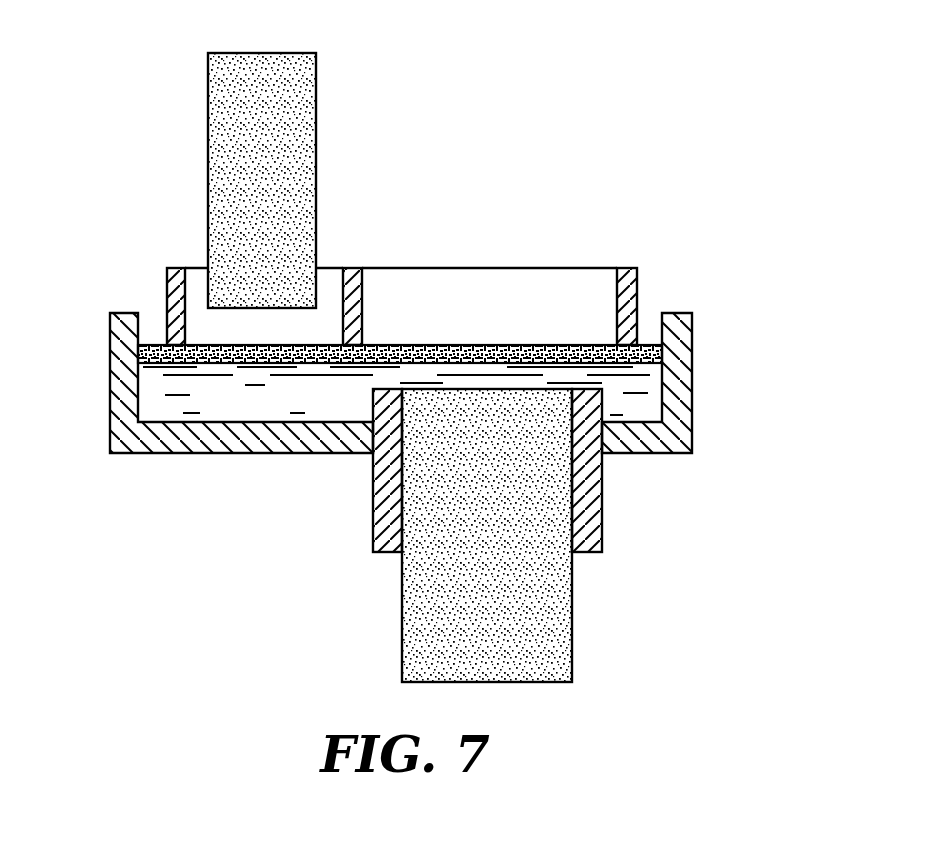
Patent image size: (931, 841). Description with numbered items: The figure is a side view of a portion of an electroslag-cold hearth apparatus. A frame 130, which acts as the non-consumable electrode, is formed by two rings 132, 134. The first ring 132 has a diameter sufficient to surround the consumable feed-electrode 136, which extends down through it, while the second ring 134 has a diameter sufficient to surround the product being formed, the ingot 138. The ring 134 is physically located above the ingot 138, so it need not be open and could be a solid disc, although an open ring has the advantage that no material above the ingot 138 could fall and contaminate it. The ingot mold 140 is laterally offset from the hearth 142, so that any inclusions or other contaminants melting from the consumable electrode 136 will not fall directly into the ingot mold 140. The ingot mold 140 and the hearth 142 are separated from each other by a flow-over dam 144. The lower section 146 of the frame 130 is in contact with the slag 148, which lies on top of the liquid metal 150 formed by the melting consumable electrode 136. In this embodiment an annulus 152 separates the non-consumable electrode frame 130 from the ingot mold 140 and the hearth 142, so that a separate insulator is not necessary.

The frame 130 is at (512, 263).
The ring 132 is at (177, 267).
The ring 134 is at (627, 267).
The consumable electrode 136 is at (237, 167).
The ingot 138 is at (462, 517).
The ingot mold 140 is at (680, 397).
The hearth 142 is at (122, 400).
The flow-over dam 144 is at (373, 401).
The lower section 146 is at (642, 340).
The slag 148 is at (142, 355).
The liquid metal 150 is at (192, 410).
The annulus 152 is at (152, 320).